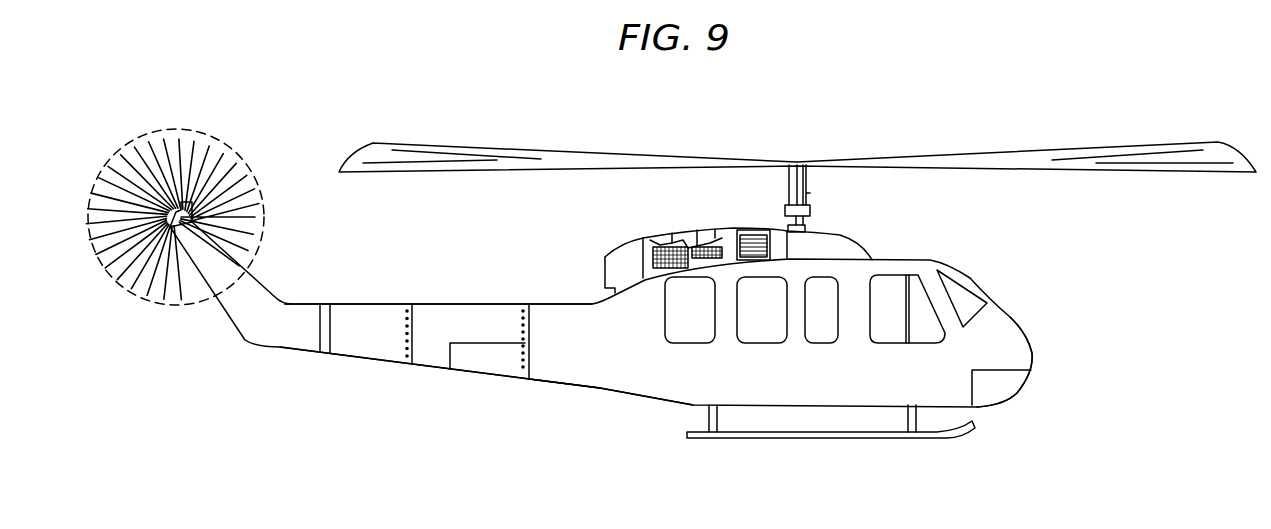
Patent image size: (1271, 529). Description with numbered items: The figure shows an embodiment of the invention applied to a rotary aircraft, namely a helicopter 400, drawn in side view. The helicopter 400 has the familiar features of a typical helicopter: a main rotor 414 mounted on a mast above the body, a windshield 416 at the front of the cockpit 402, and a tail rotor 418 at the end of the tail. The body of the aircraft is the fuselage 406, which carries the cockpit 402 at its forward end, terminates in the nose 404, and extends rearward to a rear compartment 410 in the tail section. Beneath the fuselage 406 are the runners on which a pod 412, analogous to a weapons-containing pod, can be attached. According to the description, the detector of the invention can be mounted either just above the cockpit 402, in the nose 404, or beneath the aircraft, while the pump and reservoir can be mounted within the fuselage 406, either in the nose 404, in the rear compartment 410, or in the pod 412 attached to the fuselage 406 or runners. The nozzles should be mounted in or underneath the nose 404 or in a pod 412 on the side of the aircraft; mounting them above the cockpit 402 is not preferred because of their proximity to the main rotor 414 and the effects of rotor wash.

The helicopter 400 is at (342, 130).
The cockpit 402 is at (920, 312).
The nose 404 is at (1032, 353).
The fuselage 406 is at (632, 380).
The rear compartment 410 is at (483, 363).
The pod 412 is at (952, 438).
The main rotor 414 is at (1067, 149).
The windshield 416 is at (968, 282).
The tail rotor 418 is at (257, 220).